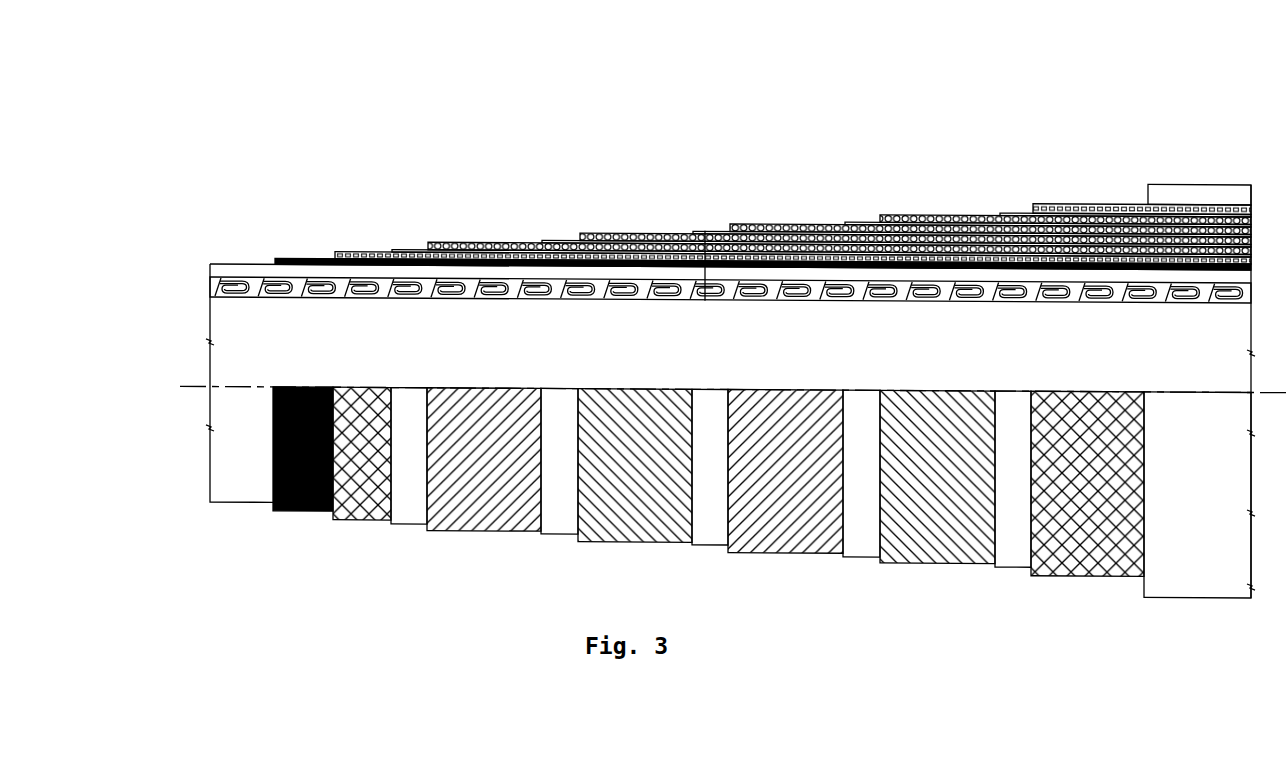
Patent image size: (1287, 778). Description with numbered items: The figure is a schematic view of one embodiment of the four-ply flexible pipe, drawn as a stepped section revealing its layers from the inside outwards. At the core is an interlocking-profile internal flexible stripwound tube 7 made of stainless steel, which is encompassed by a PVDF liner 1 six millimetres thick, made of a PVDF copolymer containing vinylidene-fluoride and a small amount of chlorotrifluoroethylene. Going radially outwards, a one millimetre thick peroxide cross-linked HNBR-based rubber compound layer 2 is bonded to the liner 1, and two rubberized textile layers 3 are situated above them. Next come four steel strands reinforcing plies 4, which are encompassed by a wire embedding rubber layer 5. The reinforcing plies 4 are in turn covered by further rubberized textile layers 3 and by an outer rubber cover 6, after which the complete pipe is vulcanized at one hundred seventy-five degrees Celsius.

The PVDF liner 1 is at (253, 268).
The HNBR-based rubber compound layer 2 is at (300, 262).
The rubberized textile layers 3 is at (360, 254).
The steel strands reinforcing plies 4 is at (460, 244).
The wire embedding rubber layer 5 is at (410, 250).
The rubber cover 6 is at (1198, 187).
The internal flexible stripwound tube 7 is at (212, 264).